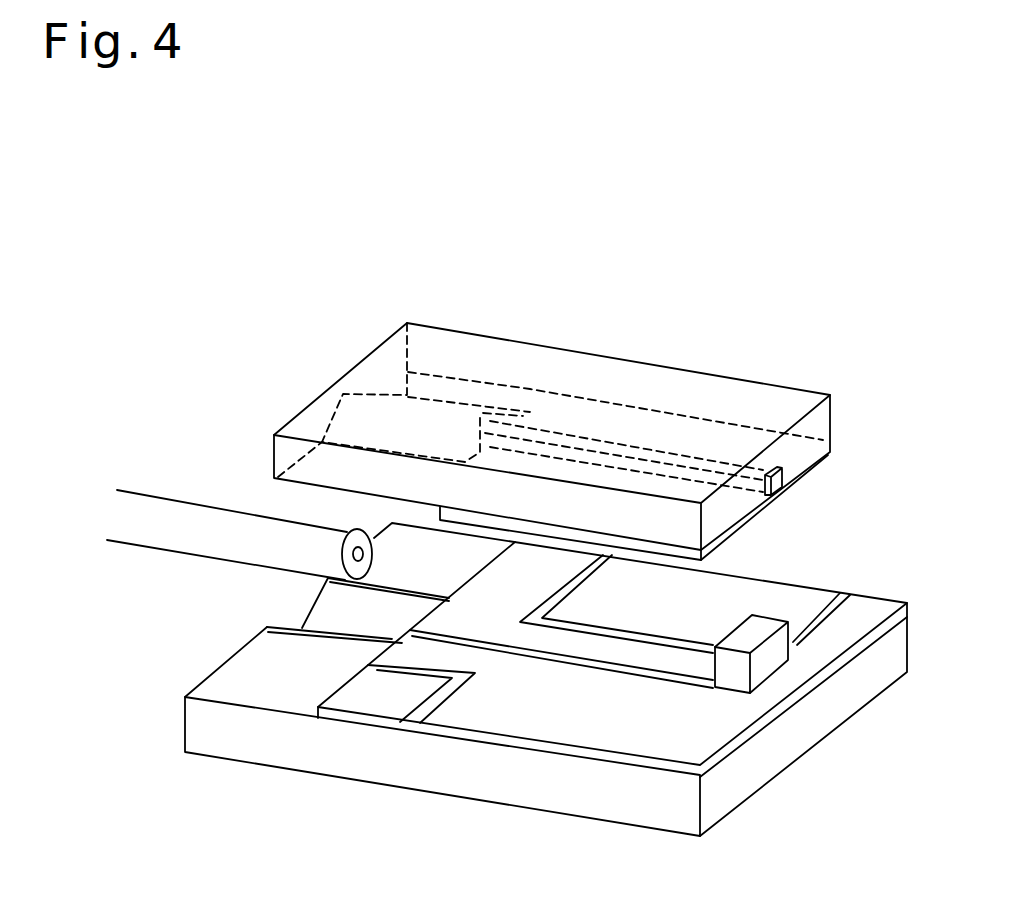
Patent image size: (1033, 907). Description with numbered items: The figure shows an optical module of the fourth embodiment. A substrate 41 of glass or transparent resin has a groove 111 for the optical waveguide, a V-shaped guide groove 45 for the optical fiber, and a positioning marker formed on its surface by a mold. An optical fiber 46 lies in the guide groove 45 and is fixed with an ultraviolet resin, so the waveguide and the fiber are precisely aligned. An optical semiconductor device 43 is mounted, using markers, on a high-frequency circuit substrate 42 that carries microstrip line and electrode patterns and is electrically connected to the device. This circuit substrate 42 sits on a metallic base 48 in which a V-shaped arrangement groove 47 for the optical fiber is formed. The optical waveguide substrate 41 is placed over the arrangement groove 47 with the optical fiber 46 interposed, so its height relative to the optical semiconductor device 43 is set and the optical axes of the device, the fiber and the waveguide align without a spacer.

The optical waveguide substrate 41 is at (703, 370).
The high-frequency circuit substrate 42 is at (705, 735).
The optical semiconductor device 43 is at (755, 637).
The guide groove for optical fiber 45 is at (385, 395).
The optical fiber 46 is at (140, 512).
The arrangement groove for optical fiber 47 is at (333, 627).
The metallic base 48 is at (361, 755).
The groove for optical waveguide 111 is at (798, 481).